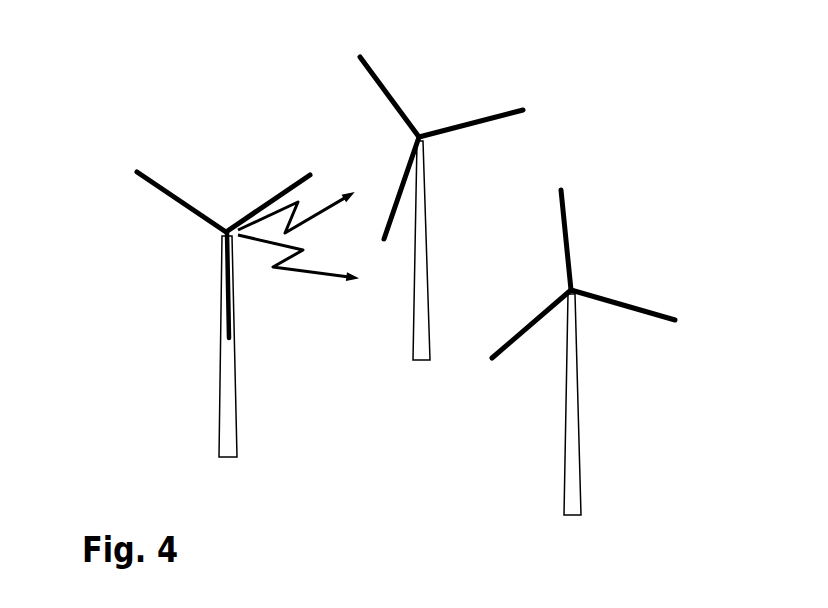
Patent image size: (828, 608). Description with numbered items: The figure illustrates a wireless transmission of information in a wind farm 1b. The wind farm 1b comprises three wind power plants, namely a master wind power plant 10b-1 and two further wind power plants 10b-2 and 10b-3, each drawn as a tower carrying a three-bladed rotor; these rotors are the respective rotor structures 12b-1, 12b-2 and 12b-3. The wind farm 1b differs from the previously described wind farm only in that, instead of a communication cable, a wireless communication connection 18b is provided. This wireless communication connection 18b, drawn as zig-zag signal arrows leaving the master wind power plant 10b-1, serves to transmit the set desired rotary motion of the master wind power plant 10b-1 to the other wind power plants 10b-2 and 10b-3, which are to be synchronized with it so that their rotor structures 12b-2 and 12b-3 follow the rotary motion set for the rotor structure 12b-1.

The wind farm 1b is at (89, 112).
The master wind power plant 10b-1 is at (177, 394).
The wind power plant 10b-2 is at (382, 333).
The wind power plant 10b-3 is at (534, 473).
The rotor structure 12b-1 is at (215, 196).
The rotor structure 12b-2 is at (430, 108).
The rotor structure 12b-3 is at (602, 273).
The wireless communication connection 18b is at (282, 294).